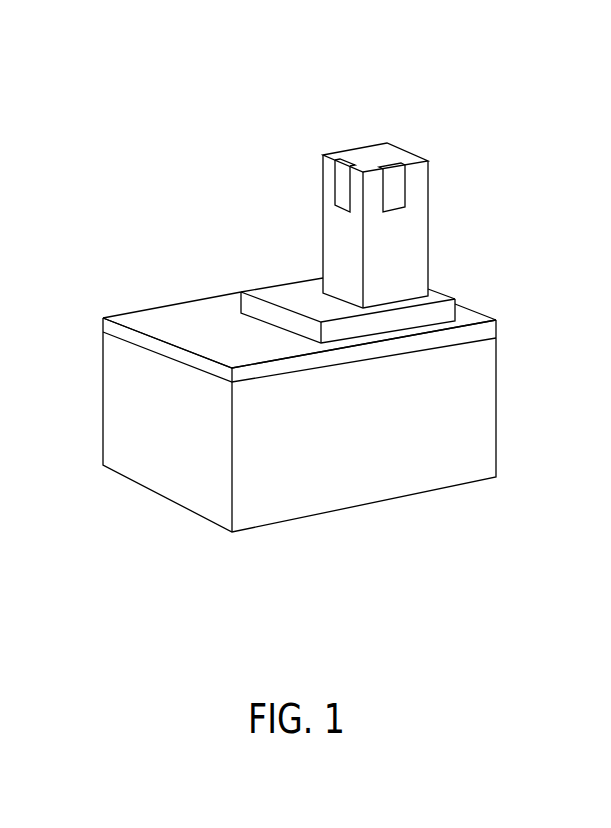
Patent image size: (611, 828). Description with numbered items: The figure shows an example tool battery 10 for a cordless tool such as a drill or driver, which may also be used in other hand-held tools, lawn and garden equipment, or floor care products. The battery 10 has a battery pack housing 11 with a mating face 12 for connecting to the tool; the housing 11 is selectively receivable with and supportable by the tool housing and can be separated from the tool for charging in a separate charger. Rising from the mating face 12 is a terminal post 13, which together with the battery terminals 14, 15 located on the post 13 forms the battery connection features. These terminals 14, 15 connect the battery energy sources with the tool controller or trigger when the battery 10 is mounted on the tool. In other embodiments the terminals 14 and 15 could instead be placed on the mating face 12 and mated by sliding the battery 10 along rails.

The tool battery 10 is at (156, 129).
The battery pack housing 11 is at (445, 462).
The mating face 12 is at (172, 327).
The terminal post 13 is at (407, 257).
The battery terminal 14 is at (397, 190).
The battery terminal 15 is at (347, 185).